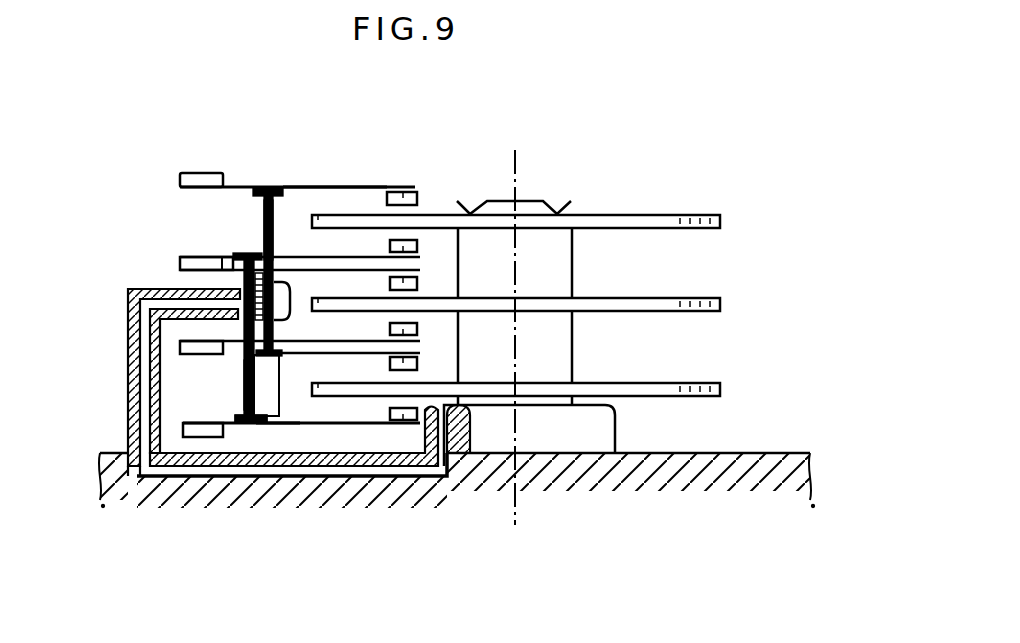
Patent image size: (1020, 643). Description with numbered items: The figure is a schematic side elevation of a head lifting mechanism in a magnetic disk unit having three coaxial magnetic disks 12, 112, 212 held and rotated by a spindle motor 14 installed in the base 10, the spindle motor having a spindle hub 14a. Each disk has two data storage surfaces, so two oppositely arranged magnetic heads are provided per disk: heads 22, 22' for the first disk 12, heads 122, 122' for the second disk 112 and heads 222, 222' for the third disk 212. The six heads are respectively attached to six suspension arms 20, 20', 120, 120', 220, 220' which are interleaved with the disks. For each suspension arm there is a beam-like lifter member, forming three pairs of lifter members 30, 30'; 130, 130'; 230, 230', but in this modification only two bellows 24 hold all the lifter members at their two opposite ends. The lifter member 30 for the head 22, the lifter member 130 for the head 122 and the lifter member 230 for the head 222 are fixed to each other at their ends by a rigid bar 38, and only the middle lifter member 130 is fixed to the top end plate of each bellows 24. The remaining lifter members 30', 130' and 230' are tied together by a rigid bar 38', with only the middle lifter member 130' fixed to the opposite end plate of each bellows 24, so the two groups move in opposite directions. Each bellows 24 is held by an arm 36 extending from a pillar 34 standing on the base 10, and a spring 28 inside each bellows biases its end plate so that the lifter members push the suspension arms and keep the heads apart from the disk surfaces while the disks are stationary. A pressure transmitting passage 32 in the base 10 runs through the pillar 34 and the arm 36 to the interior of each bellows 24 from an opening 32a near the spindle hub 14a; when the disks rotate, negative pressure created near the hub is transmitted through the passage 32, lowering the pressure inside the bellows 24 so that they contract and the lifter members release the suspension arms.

The base 10 is at (767, 462).
The first magnetic disk 12 is at (702, 215).
The second magnetic disk 112 is at (710, 298).
The third magnetic disk 212 is at (714, 382).
The spindle motor 14 is at (537, 200).
The spindle hub 14a is at (562, 400).
The suspension arm 20 is at (298, 145).
The suspension arm 20' is at (300, 246).
The suspension arm 120 is at (300, 285).
The suspension arm 120' is at (300, 329).
The suspension arm 220 is at (338, 367).
The suspension arm 220' is at (301, 414).
The magnetic head 22 is at (429, 154).
The magnetic head 22' is at (447, 199).
The magnetic head 122 is at (481, 263).
The magnetic head 122' is at (481, 347).
The magnetic head 222 is at (481, 376).
The magnetic head 222' is at (412, 498).
The bellows 24 is at (237, 268).
The spring 28 is at (308, 187).
The lifter member 30 is at (235, 259).
The lifter member 30' is at (186, 278).
The pressure transmitting passage 32 is at (333, 472).
The opening 32a is at (447, 455).
The pillar 34 is at (130, 396).
The arm 36 is at (157, 328).
The rigid bar 38 is at (231, 181).
The rigid bar 38' is at (209, 385).
The lifter member 130 is at (320, 211).
The lifter member 130' is at (169, 292).
The lifter member 230 is at (266, 506).
The lifter member 230' is at (203, 502).